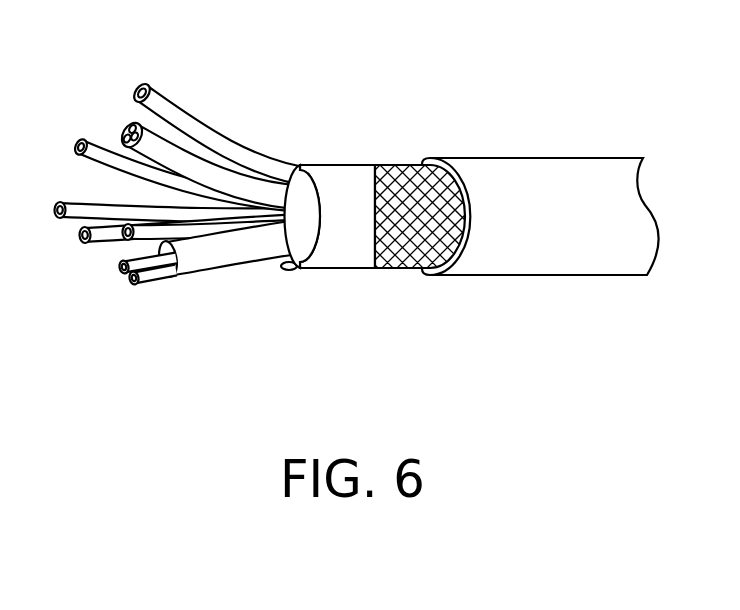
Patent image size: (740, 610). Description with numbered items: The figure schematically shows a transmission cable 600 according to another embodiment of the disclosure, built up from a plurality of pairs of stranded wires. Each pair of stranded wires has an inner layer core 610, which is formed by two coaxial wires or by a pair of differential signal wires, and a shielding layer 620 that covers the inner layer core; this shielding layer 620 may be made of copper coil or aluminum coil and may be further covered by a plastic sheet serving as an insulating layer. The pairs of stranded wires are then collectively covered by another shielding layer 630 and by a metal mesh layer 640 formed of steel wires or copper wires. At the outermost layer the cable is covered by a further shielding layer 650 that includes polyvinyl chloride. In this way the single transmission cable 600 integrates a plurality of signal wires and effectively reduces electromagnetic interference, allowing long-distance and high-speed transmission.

The transmission cable 600 is at (667, 422).
The inner layer core 610 is at (156, 274).
The shielding layer 620 is at (199, 177).
The shielding layer 630 is at (332, 262).
The metal mesh layer 640 is at (397, 262).
The shielding layer 650 is at (523, 263).